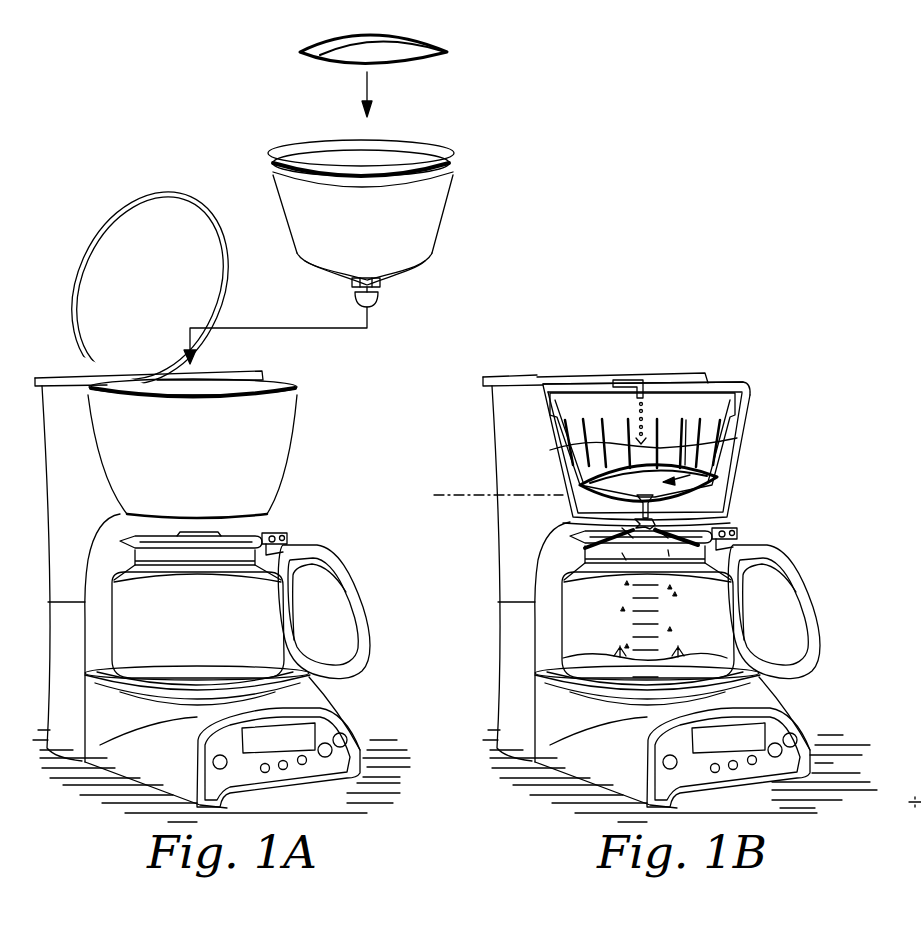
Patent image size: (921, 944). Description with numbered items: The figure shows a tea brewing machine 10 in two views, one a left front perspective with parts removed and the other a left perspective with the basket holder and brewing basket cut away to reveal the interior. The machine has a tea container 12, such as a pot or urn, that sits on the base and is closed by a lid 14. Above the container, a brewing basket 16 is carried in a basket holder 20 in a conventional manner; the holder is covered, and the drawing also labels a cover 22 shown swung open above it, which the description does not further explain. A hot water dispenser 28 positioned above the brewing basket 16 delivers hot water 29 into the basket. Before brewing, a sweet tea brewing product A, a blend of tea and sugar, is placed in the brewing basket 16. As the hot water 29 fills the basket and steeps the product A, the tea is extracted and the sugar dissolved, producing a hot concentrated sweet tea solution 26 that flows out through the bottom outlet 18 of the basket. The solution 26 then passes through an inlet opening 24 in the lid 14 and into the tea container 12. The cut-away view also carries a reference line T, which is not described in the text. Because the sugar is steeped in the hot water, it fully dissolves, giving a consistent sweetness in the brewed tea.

In FIG. 1A, the tea brewing machine 10 is at (330, 393).
In FIG. 1B, the tea brewing machine 10 is at (812, 414).
In FIG. 1A, the tea container 12 is at (183, 645).
In FIG. 1B, the tea container 12 is at (580, 634).
In FIG. 1A, the lid 14 is at (258, 528).
In FIG. 1B, the lid 14 is at (606, 546).
In FIG. 1A, the brewing basket 16 is at (432, 203).
In FIG. 1B, the brewing basket 16 is at (563, 456).
In FIG. 1A, the bottom outlet 18 is at (383, 288).
In FIG. 1B, the bottom outlet 18 is at (655, 513).
In FIG. 1A, the basket holder 20 is at (173, 467).
In FIG. 1B, the basket holder 20 is at (750, 404).
In FIG. 1A, the reservoir lid 22 is at (170, 207).
In FIG. 1B, the reservoir lid 22 is at (622, 378).
In FIG. 1A, the inlet opening 24 is at (197, 533).
In FIG. 1B, the inlet opening 24 is at (632, 526).
In FIG. 1B, the hot concentrated sweet tea solution 26 is at (697, 645).
In FIG. 1B, the hot water dispenser 28 is at (640, 380).
In FIG. 1B, the hot water 29 is at (692, 430).
In FIG. 1A, the sweet tea brewing product A is at (457, 50).
In FIG. 1B, the sweet tea brewing product A is at (690, 475).
In FIG. 1B, the reference line T is at (491, 493).